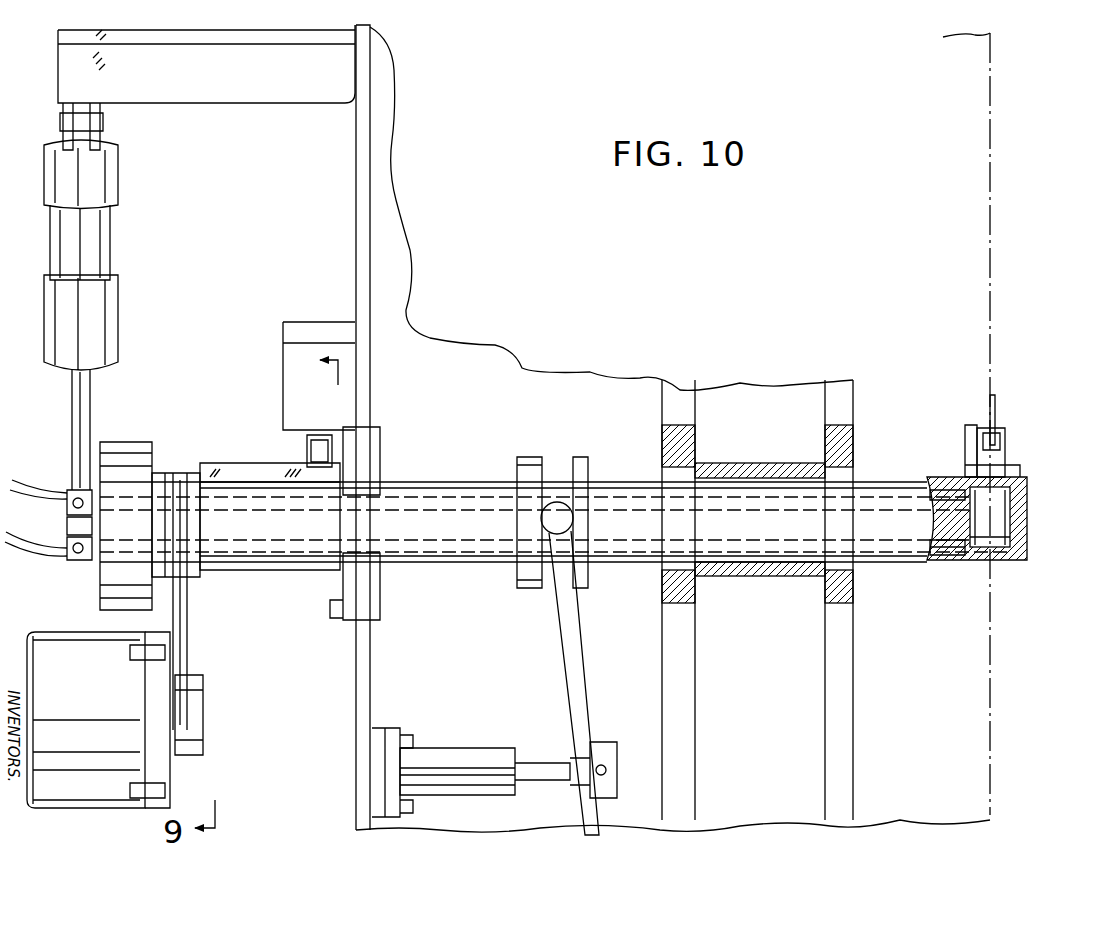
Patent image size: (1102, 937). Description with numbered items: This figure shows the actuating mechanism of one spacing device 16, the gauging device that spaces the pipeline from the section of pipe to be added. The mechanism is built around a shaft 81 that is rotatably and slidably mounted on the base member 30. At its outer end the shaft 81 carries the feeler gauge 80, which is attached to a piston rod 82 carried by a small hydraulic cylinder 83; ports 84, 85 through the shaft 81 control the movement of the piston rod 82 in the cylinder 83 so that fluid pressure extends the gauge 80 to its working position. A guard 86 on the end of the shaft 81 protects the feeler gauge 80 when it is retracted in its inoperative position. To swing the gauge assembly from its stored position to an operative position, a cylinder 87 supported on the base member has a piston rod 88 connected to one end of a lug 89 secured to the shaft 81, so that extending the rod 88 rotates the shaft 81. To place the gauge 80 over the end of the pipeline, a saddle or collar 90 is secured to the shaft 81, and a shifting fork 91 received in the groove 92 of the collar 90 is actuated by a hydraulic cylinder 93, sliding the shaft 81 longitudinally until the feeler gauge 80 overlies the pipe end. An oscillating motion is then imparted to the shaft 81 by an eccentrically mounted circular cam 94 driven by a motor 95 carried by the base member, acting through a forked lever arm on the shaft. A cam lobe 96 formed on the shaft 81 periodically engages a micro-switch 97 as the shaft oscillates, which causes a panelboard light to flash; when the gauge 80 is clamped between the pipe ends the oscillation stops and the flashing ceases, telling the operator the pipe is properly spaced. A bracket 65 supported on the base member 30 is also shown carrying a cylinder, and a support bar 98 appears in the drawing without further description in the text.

The spacing device 16 is at (996, 396).
The base member 30 is at (354, 690).
The bracket 65 is at (358, 778).
The feeler gauge 80 is at (1000, 418).
The shaft 81 is at (473, 480).
The piston rod 82 is at (1005, 440).
The hydraulic cylinder 83 is at (1027, 500).
The port 84 is at (950, 490).
The port 85 is at (950, 556).
The guard 86 is at (965, 430).
The cylinder 87 is at (102, 237).
The piston rod 88 is at (73, 424).
The lug 89 is at (68, 523).
The saddle or collar 90 is at (530, 457).
The shifting fork 91 is at (582, 670).
The groove 92 is at (558, 470).
The hydraulic cylinder 93 is at (485, 748).
The circular cam 94 is at (203, 698).
The motor 95 is at (85, 640).
The cam lobe 96 is at (278, 462).
The micro-switch 97 is at (283, 354).
The support bar 98 is at (182, 625).